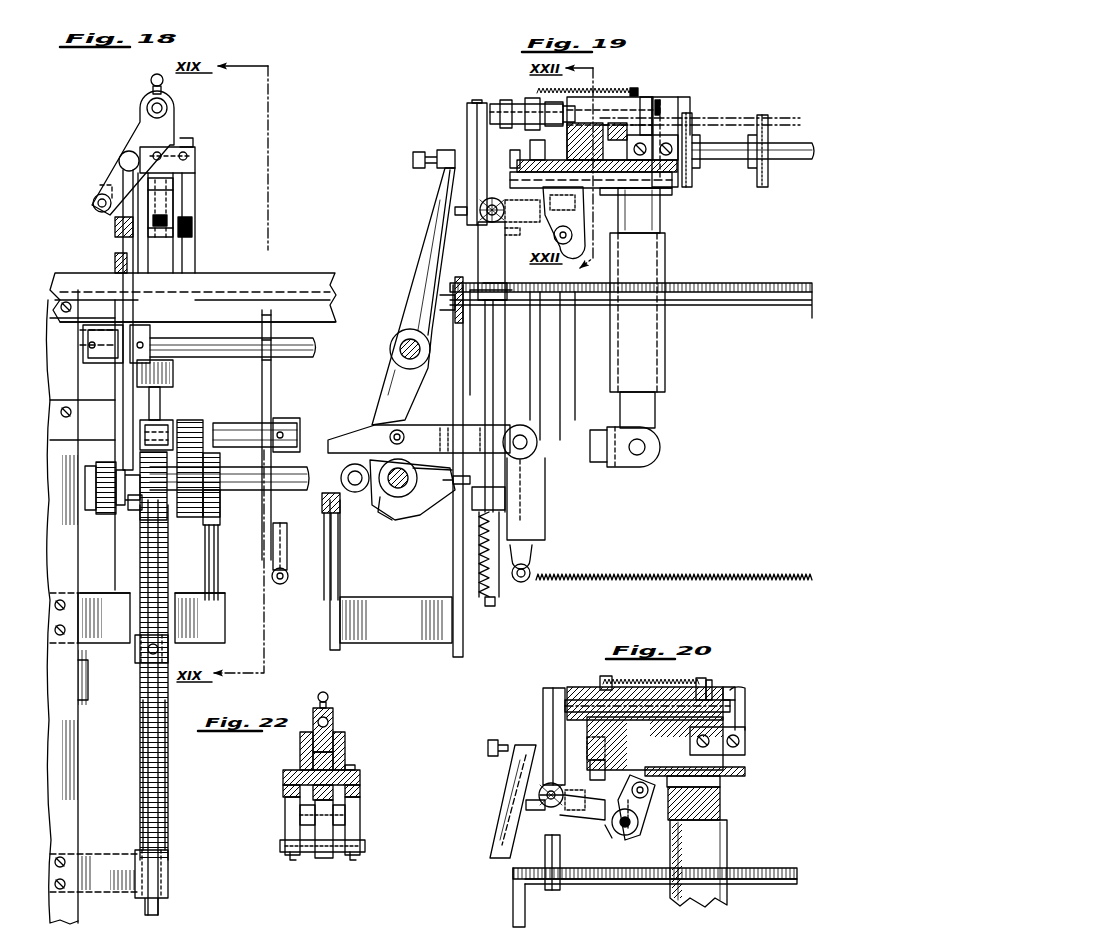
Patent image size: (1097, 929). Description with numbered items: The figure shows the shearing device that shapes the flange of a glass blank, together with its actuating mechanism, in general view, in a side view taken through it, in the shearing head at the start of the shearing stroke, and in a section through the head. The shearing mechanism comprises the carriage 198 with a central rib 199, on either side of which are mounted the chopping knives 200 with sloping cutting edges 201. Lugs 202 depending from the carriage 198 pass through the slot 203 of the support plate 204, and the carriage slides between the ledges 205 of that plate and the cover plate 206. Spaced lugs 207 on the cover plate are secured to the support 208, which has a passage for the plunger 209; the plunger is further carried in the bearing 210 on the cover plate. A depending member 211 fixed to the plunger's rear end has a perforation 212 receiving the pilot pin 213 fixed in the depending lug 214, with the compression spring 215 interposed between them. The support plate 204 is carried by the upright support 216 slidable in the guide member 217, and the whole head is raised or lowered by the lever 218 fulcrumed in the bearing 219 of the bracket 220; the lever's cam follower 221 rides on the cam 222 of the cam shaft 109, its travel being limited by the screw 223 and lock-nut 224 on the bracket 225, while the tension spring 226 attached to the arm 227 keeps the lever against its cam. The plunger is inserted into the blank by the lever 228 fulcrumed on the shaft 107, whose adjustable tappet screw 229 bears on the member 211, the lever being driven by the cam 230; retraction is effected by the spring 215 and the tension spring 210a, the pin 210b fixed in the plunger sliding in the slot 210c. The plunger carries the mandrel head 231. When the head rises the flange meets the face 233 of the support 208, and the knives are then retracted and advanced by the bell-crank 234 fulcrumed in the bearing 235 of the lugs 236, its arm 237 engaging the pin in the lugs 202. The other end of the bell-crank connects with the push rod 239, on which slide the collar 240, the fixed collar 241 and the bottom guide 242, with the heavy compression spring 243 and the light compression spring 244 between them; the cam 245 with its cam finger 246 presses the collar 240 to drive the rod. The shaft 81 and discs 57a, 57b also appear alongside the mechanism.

In FIG. 19, the disc 57a is at (700, 150).
In FIG. 19, the disc 57b is at (771, 151).
In FIG. 19, the shaft 81 is at (790, 152).
In FIG. 18, the shaft 107 is at (282, 338).
In FIG. 19, the shaft 107 is at (392, 350).
In FIG. 18, the cam shaft 109 is at (230, 490).
In FIG. 19, the carriage 198 is at (548, 140).
In FIG. 20, the carriage 198 is at (745, 760).
In FIG. 22, the carriage 198 is at (356, 778).
In FIG. 20, the central rib 199 is at (603, 740).
In FIG. 22, the central rib 199 is at (300, 760).
In FIG. 19, the chopping knives 200 is at (678, 98).
In FIG. 20, the chopping knives 200 is at (748, 728).
In FIG. 20, the sloping cutting edges 201 is at (745, 694).
In FIG. 19, the lugs 202 is at (585, 205).
In FIG. 20, the lugs 202 is at (646, 795).
In FIG. 22, the lugs 202 is at (302, 815).
In FIG. 20, the slot 203 is at (598, 770).
In FIG. 19, the support plate 204 is at (672, 186).
In FIG. 20, the support plate 204 is at (738, 778).
In FIG. 22, the support plate 204 is at (288, 776).
In FIG. 22, the ledges 205 is at (288, 790).
In FIG. 19, the cover plate 206 is at (525, 182).
In FIG. 22, the cover plate 206 is at (350, 770).
In FIG. 19, the spaced lugs 207 is at (628, 78).
In FIG. 22, the spaced lugs 207 is at (303, 750).
In FIG. 19, the support 208 is at (640, 97).
In FIG. 20, the support 208 is at (705, 686).
In FIG. 22, the support 208 is at (333, 716).
In FIG. 18, the plunger 209 is at (150, 104).
In FIG. 19, the plunger 209 is at (496, 100).
In FIG. 20, the plunger 209 is at (618, 684).
In FIG. 22, the plunger 209 is at (338, 725).
In FIG. 18, the bearing 210 is at (170, 104).
In FIG. 19, the bearing 210 is at (526, 100).
In FIG. 20, the bearing 210 is at (590, 688).
In FIG. 19, the tension spring 210a is at (578, 90).
In FIG. 20, the tension spring 210a is at (674, 682).
In FIG. 20, the pin 210b is at (712, 672).
In FIG. 20, the slot 210c is at (700, 678).
In FIG. 18, the depending member 211 is at (140, 128).
In FIG. 19, the depending member 211 is at (470, 133).
In FIG. 20, the depending member 211 is at (548, 738).
In FIG. 18, the perforation 212 is at (100, 190).
In FIG. 18, the pilot pin 213 is at (93, 203).
In FIG. 19, the pilot pin 213 is at (462, 211).
In FIG. 20, the pilot pin 213 is at (525, 815).
In FIG. 18, the depending lug 214 is at (118, 164).
In FIG. 19, the depending lug 214 is at (522, 200).
In FIG. 20, the depending lug 214 is at (610, 830).
In FIG. 19, the compression spring 215 is at (470, 228).
In FIG. 18, the upright support 216 is at (163, 395).
In FIG. 19, the upright support 216 is at (648, 222).
In FIG. 20, the upright support 216 is at (720, 803).
In FIG. 18, the guide member 217 is at (173, 374).
In FIG. 19, the guide member 217 is at (660, 312).
In FIG. 20, the guide member 217 is at (728, 850).
In FIG. 18, the lever 218 is at (193, 435).
In FIG. 19, the lever 218 is at (600, 424).
In FIG. 18, the bearing 219 is at (272, 420).
In FIG. 19, the bearing 219 is at (532, 428).
In FIG. 18, the bracket 220 is at (270, 372).
In FIG. 19, the bracket 220 is at (530, 366).
In FIG. 19, the cam follower 221 is at (380, 428).
In FIG. 19, the cam 222 is at (425, 520).
In FIG. 18, the screw 223 is at (218, 510).
In FIG. 19, the screw 223 is at (324, 494).
In FIG. 19, the lock-nut 224 is at (325, 516).
In FIG. 18, the bracket 225 is at (128, 594).
In FIG. 19, the bracket 225 is at (420, 588).
In FIG. 18, the tension spring 226 is at (283, 586).
In FIG. 19, the tension spring 226 is at (686, 578).
In FIG. 18, the arm 227 is at (282, 556).
In FIG. 19, the arm 227 is at (540, 530).
In FIG. 18, the lever 228 is at (116, 256).
In FIG. 19, the lever 228 is at (414, 278).
In FIG. 20, the lever 228 is at (516, 800).
In FIG. 19, the adjustable tappet screw 229 is at (420, 152).
In FIG. 20, the adjustable tappet screw 229 is at (498, 740).
In FIG. 19, the cam 230 is at (402, 520).
In FIG. 18, the mandrel head 231 is at (190, 240).
In FIG. 19, the mandrel head 231 is at (545, 242).
In FIG. 19, the face 233 is at (658, 95).
In FIG. 20, the face 233 is at (730, 686).
In FIG. 20, the bell-crank 234 is at (608, 832).
In FIG. 20, the bearing 235 is at (636, 830).
In FIG. 18, the lugs 236 is at (190, 215).
In FIG. 19, the lugs 236 is at (587, 217).
In FIG. 22, the lugs 236 is at (360, 830).
In FIG. 20, the bell-crank arm 237 is at (640, 808).
In FIG. 18, the push rod 239 is at (163, 776).
In FIG. 19, the push rod 239 is at (500, 340).
In FIG. 20, the push rod 239 is at (558, 878).
In FIG. 18, the slidable collar 240 is at (136, 505).
In FIG. 19, the slidable collar 240 is at (508, 498).
In FIG. 18, the fixed collar 241 is at (170, 650).
In FIG. 18, the bottom guide 242 is at (168, 872).
In FIG. 18, the heavy compression spring 243 is at (165, 562).
In FIG. 18, the light compression spring 244 is at (165, 758).
In FIG. 19, the cam 245 is at (470, 482).
In FIG. 19, the cam finger 246 is at (475, 470).